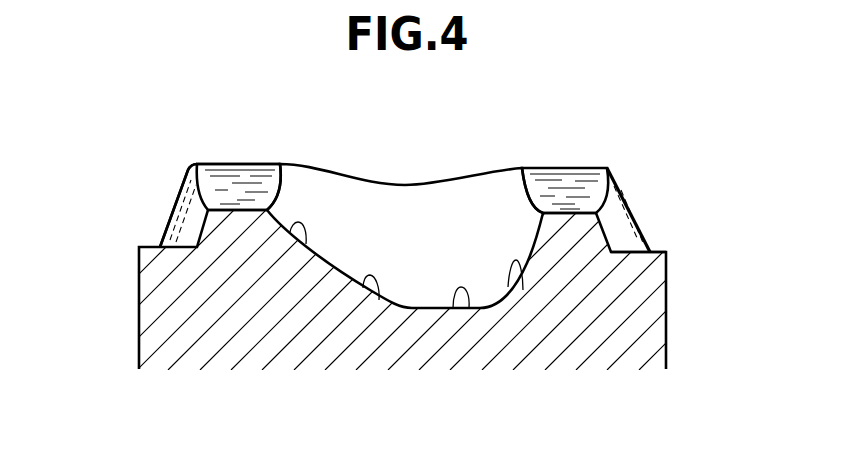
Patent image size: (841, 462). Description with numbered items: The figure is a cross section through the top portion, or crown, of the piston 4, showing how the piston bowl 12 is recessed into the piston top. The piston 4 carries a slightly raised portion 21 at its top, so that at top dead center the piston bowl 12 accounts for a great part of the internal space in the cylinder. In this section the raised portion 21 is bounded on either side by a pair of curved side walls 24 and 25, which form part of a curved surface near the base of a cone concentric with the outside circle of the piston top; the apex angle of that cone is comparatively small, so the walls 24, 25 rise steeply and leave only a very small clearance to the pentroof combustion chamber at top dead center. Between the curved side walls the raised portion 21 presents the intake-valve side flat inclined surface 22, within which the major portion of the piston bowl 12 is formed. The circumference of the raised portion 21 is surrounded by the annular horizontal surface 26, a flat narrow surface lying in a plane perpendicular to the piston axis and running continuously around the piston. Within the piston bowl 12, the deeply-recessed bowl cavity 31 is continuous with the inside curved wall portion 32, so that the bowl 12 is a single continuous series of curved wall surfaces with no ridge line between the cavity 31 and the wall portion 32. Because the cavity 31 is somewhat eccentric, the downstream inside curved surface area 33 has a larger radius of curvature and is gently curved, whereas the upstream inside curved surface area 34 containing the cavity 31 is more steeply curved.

The piston 4 is at (667, 296).
The piston bowl 12 is at (445, 220).
The raised portion 21 is at (190, 162).
The intake-valve side flat inclined surface 22 is at (238, 177).
The curved side wall 24 is at (633, 213).
The curved side wall 25 is at (187, 222).
The annular horizontal surface 26 is at (653, 250).
The deeply-recessed bowl cavity 31 is at (469, 308).
The inside curved wall portion 32 is at (306, 244).
The downstream inside curved surface area 33 is at (379, 300).
The upstream inside curved surface area 34 is at (523, 290).